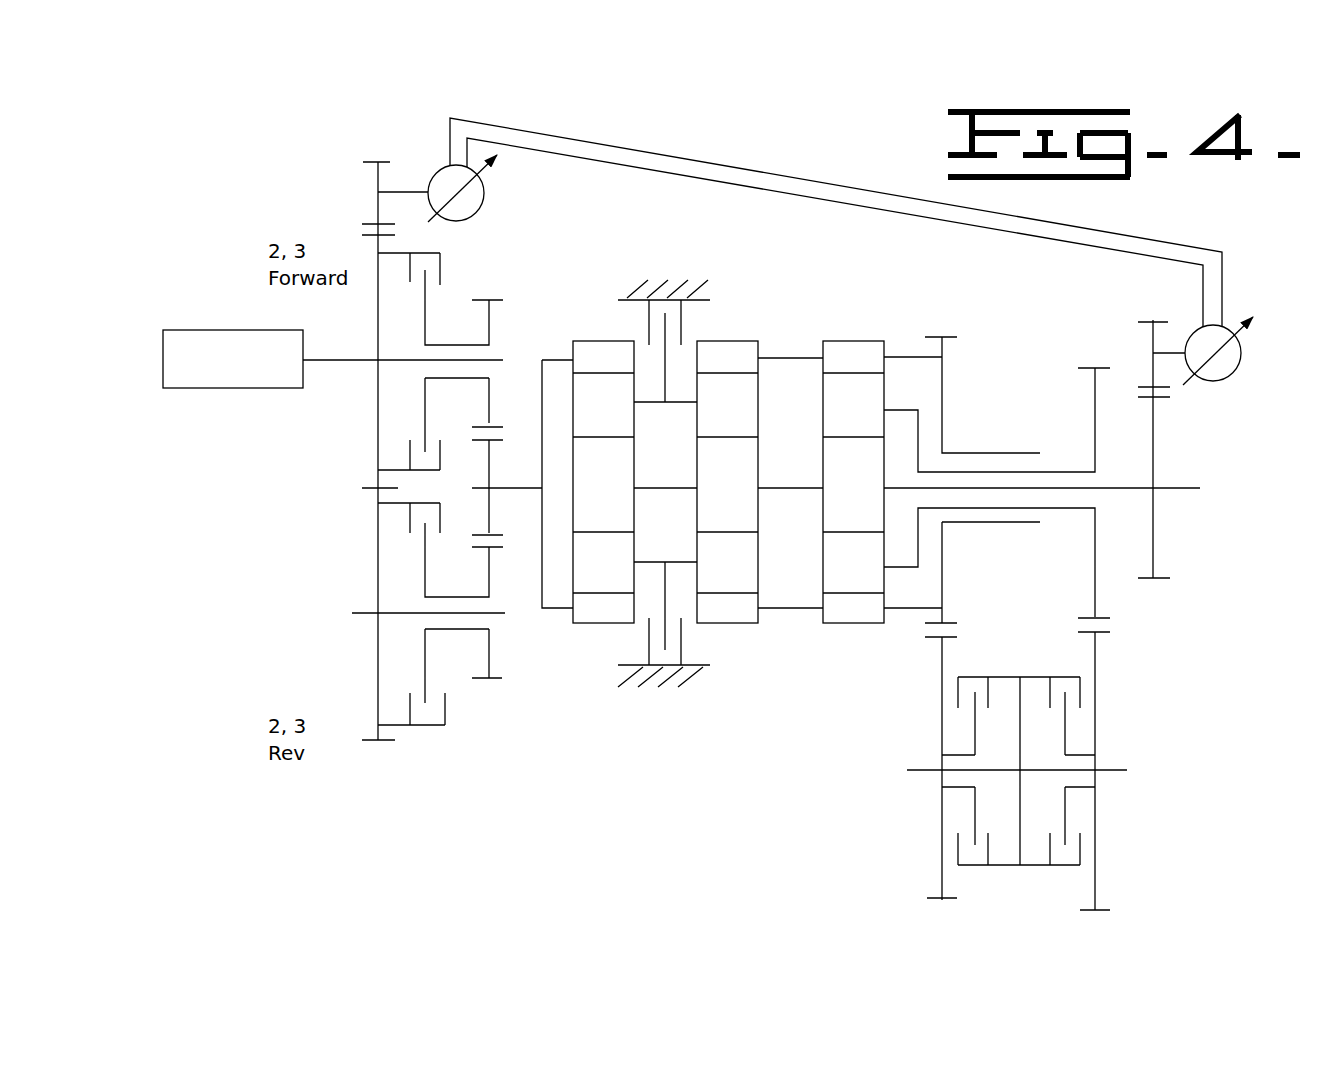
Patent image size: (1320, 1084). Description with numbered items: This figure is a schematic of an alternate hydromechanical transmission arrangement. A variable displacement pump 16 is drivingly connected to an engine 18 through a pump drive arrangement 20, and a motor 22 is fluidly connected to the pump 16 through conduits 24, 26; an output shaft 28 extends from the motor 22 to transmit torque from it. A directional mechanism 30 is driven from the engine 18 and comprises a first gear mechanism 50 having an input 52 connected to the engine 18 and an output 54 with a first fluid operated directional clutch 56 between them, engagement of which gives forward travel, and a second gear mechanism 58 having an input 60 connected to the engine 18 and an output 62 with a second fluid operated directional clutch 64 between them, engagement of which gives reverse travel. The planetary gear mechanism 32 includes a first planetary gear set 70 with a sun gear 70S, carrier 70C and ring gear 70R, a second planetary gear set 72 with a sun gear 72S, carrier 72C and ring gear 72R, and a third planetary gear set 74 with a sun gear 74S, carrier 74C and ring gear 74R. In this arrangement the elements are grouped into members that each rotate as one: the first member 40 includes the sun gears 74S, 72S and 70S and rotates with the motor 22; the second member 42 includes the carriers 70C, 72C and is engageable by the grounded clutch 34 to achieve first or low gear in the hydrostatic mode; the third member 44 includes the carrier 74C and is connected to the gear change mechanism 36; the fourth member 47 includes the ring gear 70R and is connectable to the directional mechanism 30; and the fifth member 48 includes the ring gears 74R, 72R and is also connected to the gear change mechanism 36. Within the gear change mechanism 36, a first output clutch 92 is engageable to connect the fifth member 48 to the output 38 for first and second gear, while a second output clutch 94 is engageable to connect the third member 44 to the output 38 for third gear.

The variable displacement pump 16 is at (443, 167).
The engine 18 is at (187, 330).
The pump drive arrangement 20 is at (368, 155).
The motor 22 is at (1245, 365).
The conduit 24 is at (720, 182).
The conduit 26 is at (725, 162).
The output shaft 28 is at (1170, 350).
The directional mechanism 30 is at (282, 525).
The planetary gear mechanism 32 is at (832, 278).
The grounded clutch 34 is at (710, 300).
The gear change mechanism 36 is at (932, 903).
The output 38 is at (1113, 770).
The first member 40 is at (1133, 489).
The second member 42 is at (677, 403).
The third member 44 is at (1060, 508).
The fourth member 47 is at (497, 488).
The fifth member 48 is at (905, 610).
The first gear mechanism 50 is at (485, 288).
The input 52 is at (380, 337).
The output 54 is at (490, 337).
The first fluid operated directional clutch 56 is at (440, 257).
The second gear mechanism 58 is at (472, 698).
The input 60 is at (380, 595).
The output 62 is at (490, 590).
The second fluid operated directional clutch 64 is at (432, 727).
The first planetary gear set 70 is at (597, 330).
The ring gear 70R is at (632, 628).
The sun gear 70S is at (630, 482).
The carrier 70C is at (625, 553).
The second planetary gear set 72 is at (735, 328).
The ring gear 72R is at (753, 355).
The carrier 72C is at (748, 423).
The sun gear 72S is at (770, 470).
The third planetary gear set 74 is at (872, 330).
The ring gear 74R is at (878, 355).
The carrier 74C is at (880, 397).
The sun gear 74S is at (832, 500).
The first output clutch 92 is at (968, 677).
The second output clutch 94 is at (1062, 677).